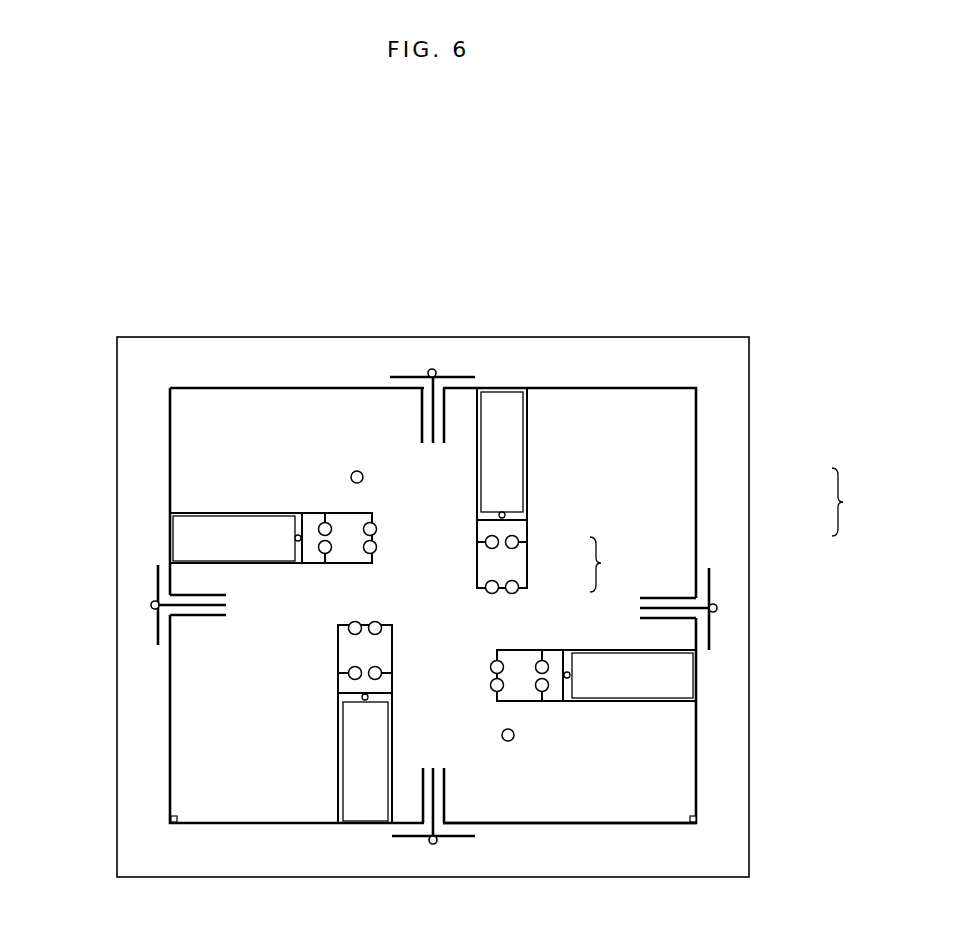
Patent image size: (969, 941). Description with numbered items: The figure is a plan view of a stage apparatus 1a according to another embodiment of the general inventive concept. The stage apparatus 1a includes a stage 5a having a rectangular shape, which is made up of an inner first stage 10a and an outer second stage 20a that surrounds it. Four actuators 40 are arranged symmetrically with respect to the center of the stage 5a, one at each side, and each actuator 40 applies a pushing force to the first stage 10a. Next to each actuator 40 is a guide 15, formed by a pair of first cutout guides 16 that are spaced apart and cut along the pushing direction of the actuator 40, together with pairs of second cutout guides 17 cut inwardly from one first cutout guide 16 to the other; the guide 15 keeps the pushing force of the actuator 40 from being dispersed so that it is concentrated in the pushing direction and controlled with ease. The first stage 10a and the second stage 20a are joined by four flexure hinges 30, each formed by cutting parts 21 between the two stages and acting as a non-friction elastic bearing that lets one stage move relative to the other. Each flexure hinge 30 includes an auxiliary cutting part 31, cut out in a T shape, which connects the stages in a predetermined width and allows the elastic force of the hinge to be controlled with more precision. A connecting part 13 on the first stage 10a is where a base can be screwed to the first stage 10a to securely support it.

The stage apparatus 1a is at (492, 572).
The stage 5a is at (849, 502).
The first stage 10a is at (670, 528).
The second stage 20a is at (738, 470).
The connecting part 13 is at (511, 741).
The guide 15 is at (335, 624).
The first cutout guide 16 is at (528, 587).
The second cutout guide 17 is at (519, 542).
The cutting part 21 is at (617, 824).
The flexure hinge 30 is at (483, 651).
The auxiliary cutting part 31 is at (712, 583).
The actuator 40 is at (502, 400).